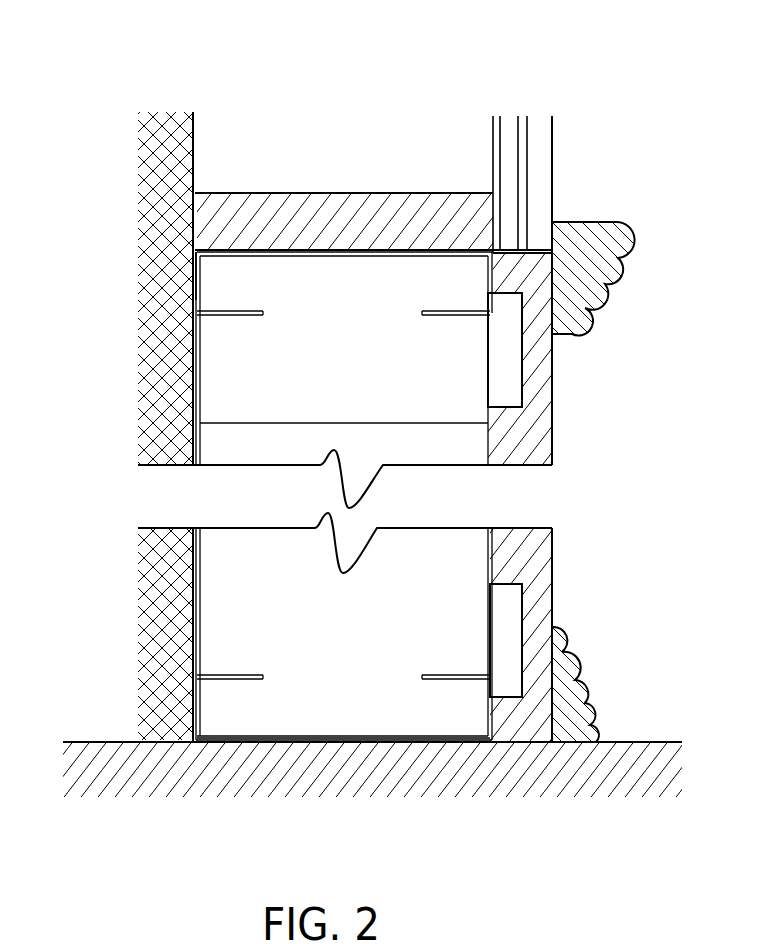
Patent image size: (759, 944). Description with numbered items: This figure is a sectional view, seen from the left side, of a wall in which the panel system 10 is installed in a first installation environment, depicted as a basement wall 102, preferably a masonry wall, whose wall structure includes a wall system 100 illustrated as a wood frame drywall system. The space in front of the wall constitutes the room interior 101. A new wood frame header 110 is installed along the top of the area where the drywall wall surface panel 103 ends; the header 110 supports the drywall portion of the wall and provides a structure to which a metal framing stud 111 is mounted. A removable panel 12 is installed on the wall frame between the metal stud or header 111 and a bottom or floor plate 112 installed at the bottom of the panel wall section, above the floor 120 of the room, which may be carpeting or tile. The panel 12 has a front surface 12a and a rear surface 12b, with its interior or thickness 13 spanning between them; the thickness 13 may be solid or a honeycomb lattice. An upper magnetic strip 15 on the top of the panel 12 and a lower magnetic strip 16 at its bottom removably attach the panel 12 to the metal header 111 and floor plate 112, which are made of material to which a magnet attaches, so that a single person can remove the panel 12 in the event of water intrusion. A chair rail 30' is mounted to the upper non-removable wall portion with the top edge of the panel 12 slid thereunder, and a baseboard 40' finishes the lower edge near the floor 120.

The panel system 10 is at (662, 359).
The panel 12 is at (561, 464).
The front surface 12a is at (553, 423).
The rear surface 12b is at (490, 423).
The thickness 13 is at (535, 270).
The upper magnetic strip 15 is at (503, 375).
The lower magnetic strip 16 is at (525, 620).
The chair rail 30' is at (605, 253).
The baseboard 40' is at (605, 684).
The wall system 100 is at (148, 97).
The building interior 101 is at (246, 134).
The basement wall 102 is at (152, 183).
The drywall wall surface panel 103 is at (527, 130).
The header 110 is at (305, 193).
The metal framing stud 111 is at (197, 278).
The floor plate 112 is at (337, 742).
The floor 120 is at (652, 742).